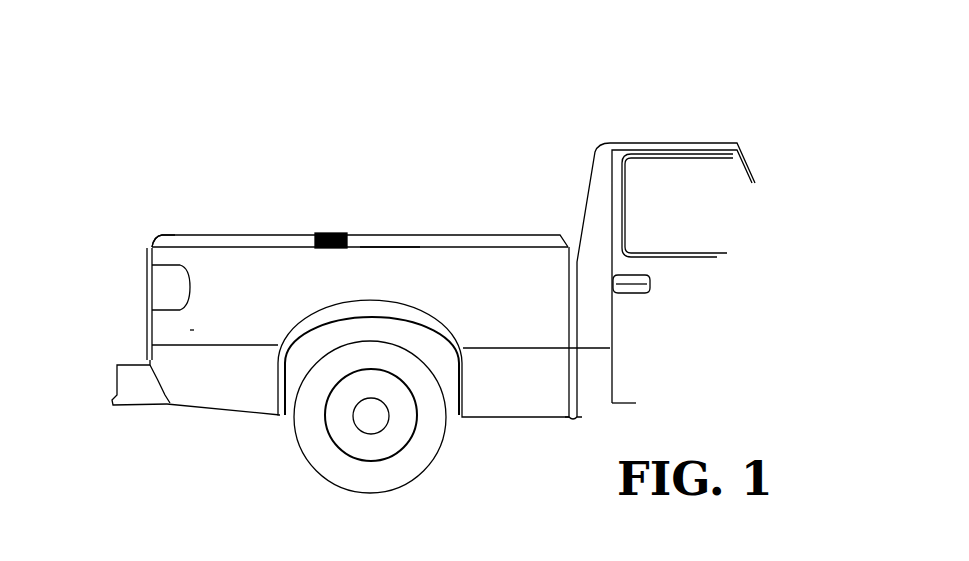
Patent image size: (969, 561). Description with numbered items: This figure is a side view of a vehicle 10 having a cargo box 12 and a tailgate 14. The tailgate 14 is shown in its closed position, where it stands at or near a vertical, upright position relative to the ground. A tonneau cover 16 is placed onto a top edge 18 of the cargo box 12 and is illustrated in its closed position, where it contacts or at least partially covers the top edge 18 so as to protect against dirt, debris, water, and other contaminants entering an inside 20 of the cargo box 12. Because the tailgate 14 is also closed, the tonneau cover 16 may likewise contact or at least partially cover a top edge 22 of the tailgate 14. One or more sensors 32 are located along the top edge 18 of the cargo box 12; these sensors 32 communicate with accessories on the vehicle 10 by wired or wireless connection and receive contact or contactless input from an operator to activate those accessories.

The vehicle 10 is at (636, 130).
The cargo box 12 is at (276, 262).
The tailgate 14 is at (148, 316).
The tonneau cover 16 is at (486, 221).
The top edge 18 is at (381, 248).
The inside 20 is at (192, 330).
The top edge 22 is at (152, 247).
The sensors 32 is at (336, 233).